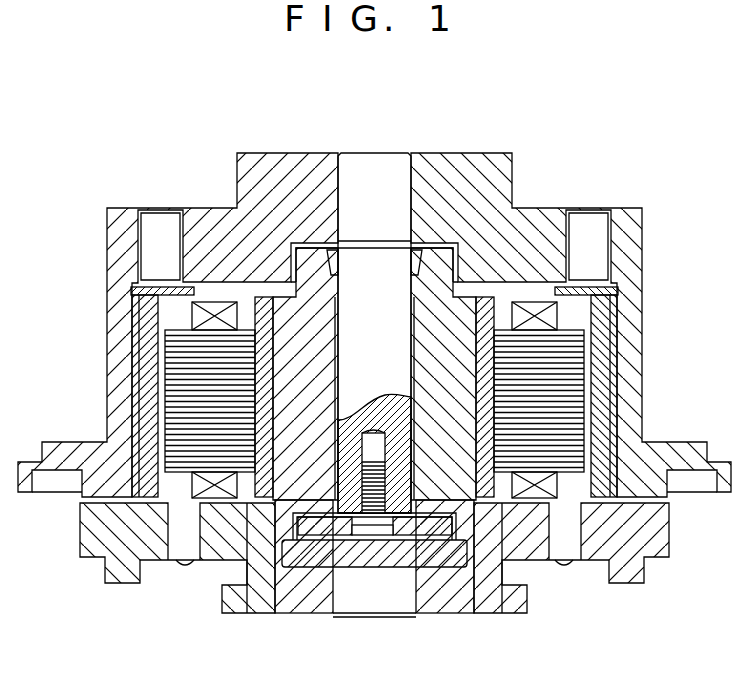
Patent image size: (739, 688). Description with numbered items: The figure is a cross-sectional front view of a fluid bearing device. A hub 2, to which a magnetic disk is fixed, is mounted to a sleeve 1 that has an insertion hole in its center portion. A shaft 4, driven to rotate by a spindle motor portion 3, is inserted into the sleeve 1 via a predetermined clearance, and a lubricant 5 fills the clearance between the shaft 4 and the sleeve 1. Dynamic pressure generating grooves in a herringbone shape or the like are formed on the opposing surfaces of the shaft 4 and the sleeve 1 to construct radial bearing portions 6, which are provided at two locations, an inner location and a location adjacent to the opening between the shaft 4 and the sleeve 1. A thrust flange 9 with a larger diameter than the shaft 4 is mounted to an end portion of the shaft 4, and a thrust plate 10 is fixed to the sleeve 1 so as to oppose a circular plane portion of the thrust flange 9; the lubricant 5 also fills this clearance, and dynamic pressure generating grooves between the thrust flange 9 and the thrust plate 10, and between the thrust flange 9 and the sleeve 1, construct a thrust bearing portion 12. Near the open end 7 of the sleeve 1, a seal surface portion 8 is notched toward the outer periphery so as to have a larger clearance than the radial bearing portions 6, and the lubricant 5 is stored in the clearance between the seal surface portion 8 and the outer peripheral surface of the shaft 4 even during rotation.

The sleeve 1 is at (457, 365).
The hub 2 is at (532, 228).
The spindle motor portion 3 is at (572, 320).
The shaft 4 is at (379, 192).
The lubricant 5 is at (337, 370).
The radial bearing portions 6 is at (277, 303).
The open end 7 is at (420, 250).
The seal surface portion 8 is at (345, 262).
The thrust flange 9 is at (343, 532).
The thrust plate 10 is at (392, 560).
The thrust bearing portion 12 is at (290, 497).